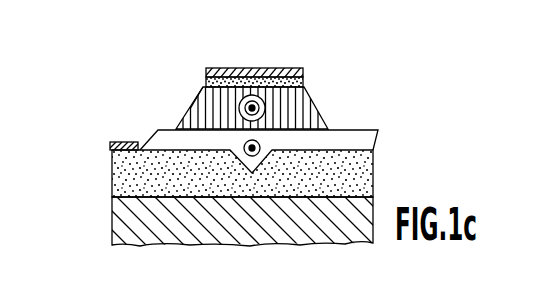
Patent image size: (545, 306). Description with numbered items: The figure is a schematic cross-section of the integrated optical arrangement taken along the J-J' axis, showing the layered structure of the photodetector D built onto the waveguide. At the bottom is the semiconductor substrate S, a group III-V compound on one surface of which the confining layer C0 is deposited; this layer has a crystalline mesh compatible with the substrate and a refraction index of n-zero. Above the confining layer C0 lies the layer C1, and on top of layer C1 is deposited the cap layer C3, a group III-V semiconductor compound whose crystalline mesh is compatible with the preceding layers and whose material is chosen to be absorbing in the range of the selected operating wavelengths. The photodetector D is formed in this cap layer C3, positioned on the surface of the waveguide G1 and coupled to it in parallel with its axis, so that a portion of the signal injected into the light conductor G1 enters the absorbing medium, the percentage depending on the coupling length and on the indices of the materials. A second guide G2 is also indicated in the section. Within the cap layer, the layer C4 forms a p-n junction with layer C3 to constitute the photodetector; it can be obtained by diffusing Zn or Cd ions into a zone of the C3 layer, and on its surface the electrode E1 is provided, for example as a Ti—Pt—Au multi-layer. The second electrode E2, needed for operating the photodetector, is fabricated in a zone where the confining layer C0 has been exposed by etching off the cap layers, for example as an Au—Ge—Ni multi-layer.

The electrode E1 is at (250, 68).
The second electrode E2 is at (132, 134).
The photodetector D is at (193, 83).
The waveguide G1 is at (238, 146).
The second groove G2 is at (237, 109).
The layer C4 is at (302, 82).
The cap layer C3 is at (296, 88).
The layer C1 is at (350, 138).
The confining layer C0 is at (352, 180).
The semiconductor substrate S is at (132, 220).